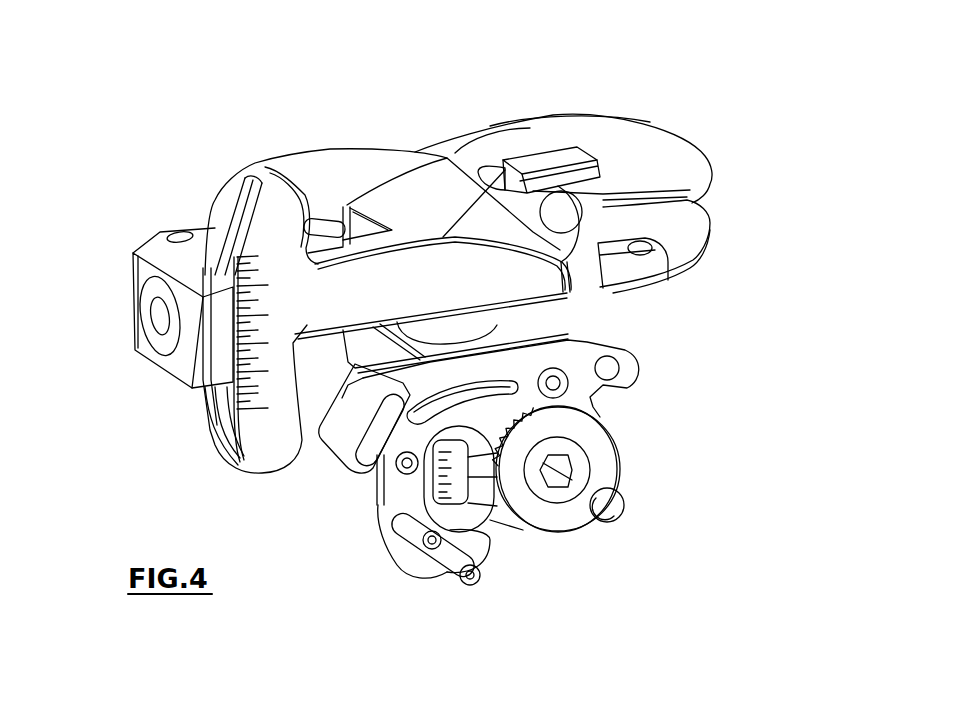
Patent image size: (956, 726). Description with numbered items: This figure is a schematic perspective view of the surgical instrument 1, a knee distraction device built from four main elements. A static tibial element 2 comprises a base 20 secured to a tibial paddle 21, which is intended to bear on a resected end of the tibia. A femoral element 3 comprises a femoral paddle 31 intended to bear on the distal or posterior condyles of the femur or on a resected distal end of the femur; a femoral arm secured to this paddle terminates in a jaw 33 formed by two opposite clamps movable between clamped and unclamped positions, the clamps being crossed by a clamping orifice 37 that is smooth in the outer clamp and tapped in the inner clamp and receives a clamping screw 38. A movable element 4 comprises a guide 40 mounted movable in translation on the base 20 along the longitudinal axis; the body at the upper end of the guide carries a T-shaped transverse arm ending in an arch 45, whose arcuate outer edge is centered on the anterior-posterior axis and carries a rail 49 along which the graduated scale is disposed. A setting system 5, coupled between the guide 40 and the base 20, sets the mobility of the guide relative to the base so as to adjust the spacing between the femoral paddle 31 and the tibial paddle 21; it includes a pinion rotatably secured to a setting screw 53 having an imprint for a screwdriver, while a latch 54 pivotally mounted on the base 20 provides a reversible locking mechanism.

The surgical instrument 1 is at (778, 478).
The static tibial element 2 is at (614, 345).
The femoral element 3 is at (571, 115).
The movable element 4 is at (372, 189).
The setting system 5 is at (632, 448).
The base 20 is at (540, 330).
The tibial paddle 21 is at (696, 220).
The femoral paddle 31 is at (620, 130).
The jaw 33 is at (142, 246).
The clamping orifice 37 is at (138, 285).
The clamping screw 38 is at (148, 313).
The guide 40 is at (403, 563).
The arch 45 is at (262, 465).
The rail 49 is at (230, 212).
The setting screw 53 is at (560, 497).
The latch 54 is at (341, 448).